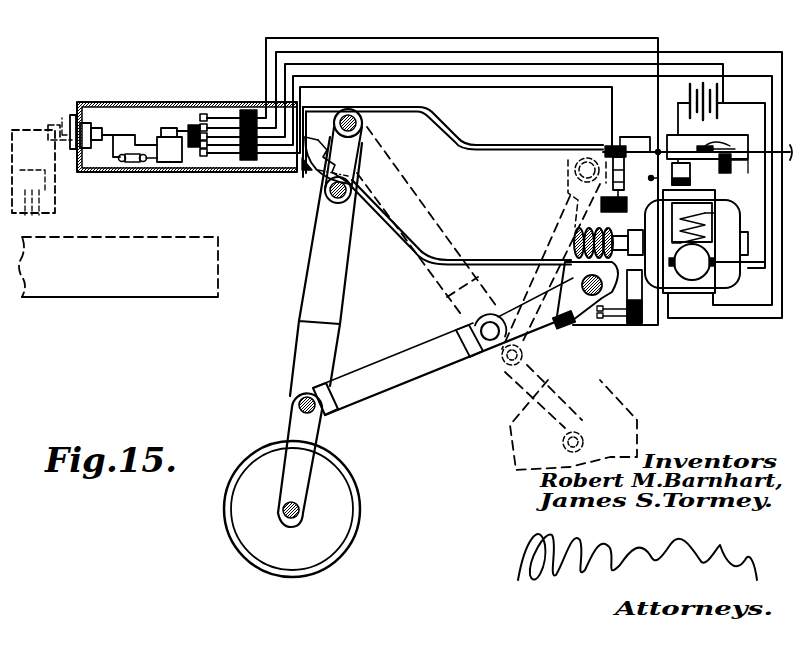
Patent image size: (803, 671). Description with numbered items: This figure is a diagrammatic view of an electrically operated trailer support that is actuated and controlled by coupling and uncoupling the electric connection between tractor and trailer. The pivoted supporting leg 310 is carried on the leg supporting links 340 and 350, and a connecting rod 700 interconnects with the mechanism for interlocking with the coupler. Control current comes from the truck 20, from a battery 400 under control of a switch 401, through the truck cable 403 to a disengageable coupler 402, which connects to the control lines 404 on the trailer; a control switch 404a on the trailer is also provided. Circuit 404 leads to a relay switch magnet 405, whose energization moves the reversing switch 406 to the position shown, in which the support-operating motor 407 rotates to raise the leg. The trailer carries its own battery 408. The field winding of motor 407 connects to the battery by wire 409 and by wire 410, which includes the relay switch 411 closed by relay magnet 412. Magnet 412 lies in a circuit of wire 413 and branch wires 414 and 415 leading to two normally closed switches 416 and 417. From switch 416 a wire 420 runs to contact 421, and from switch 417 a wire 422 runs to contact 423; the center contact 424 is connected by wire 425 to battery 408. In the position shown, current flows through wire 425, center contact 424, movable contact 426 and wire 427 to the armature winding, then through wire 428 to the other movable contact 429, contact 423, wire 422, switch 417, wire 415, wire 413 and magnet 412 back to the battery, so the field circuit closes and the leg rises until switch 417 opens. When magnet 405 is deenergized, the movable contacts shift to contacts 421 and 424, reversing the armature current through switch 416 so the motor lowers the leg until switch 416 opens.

The truck 20 is at (100, 302).
The pivoted supporting leg 310 is at (307, 348).
The leg supporting link 340 is at (398, 380).
The pivoted link 350 is at (578, 211).
The battery 400 is at (46, 229).
The switch 401 is at (28, 176).
The disengageable coupler 402 is at (72, 114).
The truck lines or cable 403 is at (50, 124).
The control lines 404 is at (113, 133).
The control switch 404a is at (130, 163).
The relay switch magnet 405 is at (168, 166).
The reversing switch 406 is at (194, 115).
The support-operating motor 407 is at (690, 300).
The battery 408 is at (710, 126).
The wire 409 is at (764, 104).
The wire 410 is at (748, 173).
The relay switch 411 is at (716, 144).
The relay magnet 412 is at (694, 175).
The wire 413 is at (707, 131).
The branch wire 414 is at (652, 218).
The branch wire 415 is at (654, 138).
The normally closed switch 416 is at (609, 328).
The normally closed switch 417 is at (612, 150).
The wire 420 is at (302, 36).
The contact 421 is at (214, 113).
The wire 422 is at (342, 88).
The contact 423 is at (229, 157).
The center contact 424 is at (246, 110).
The wire 425 is at (372, 46).
The movable contact 426 is at (248, 125).
The wire 427 is at (316, 48).
The wire 428 is at (366, 84).
The movable switch contact 429 is at (218, 156).
The connecting rod 700 is at (312, 172).